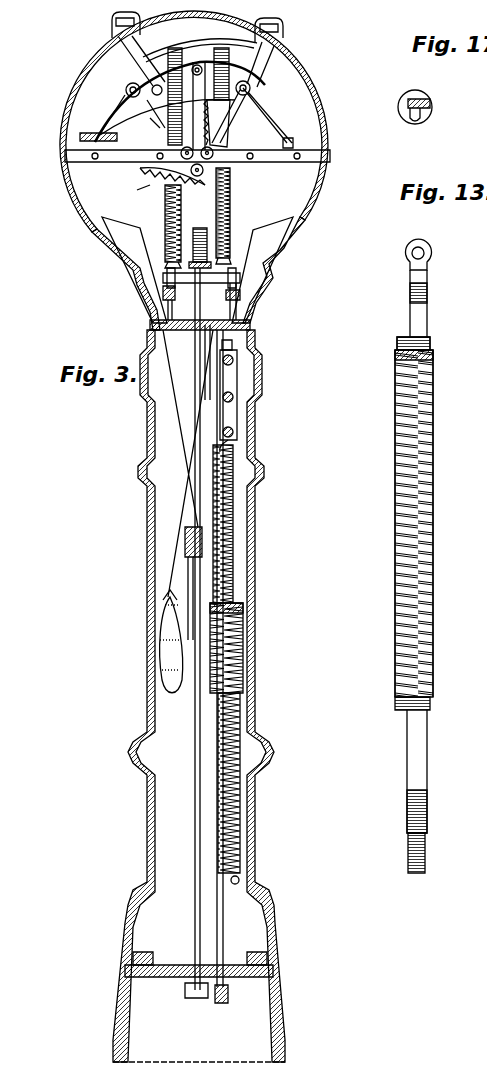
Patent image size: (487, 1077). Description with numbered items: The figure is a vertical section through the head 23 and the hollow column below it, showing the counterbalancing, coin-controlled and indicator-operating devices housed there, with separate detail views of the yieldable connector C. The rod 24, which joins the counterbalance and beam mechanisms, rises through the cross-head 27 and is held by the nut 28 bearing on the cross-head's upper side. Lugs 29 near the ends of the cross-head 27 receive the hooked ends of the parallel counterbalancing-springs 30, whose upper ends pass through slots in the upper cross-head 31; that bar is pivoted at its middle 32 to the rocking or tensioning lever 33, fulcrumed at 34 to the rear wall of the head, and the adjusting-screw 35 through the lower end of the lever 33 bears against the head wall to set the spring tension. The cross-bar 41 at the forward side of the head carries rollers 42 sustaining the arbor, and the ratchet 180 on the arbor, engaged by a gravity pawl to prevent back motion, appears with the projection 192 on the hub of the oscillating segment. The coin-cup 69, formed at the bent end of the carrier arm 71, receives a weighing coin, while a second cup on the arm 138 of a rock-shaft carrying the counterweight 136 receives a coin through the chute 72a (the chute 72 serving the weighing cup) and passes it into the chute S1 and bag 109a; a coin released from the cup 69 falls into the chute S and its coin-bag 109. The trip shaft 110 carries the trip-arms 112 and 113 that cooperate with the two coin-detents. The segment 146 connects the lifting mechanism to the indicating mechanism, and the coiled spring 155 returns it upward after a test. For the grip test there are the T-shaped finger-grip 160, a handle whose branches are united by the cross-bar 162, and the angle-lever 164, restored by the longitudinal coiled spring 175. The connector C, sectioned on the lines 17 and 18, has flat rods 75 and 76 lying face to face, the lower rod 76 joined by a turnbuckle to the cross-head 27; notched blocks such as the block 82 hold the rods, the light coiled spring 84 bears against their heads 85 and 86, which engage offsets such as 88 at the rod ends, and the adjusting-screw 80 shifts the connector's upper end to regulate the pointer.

In FIG. 3, the head 23 is at (322, 123).
In FIG. 3, the rod 24 is at (197, 730).
In FIG. 3, the cross-head 27 is at (240, 276).
In FIG. 3, the nut 28 is at (210, 255).
In FIG. 3, the lugs 29 is at (163, 275).
In FIG. 3, the counterbalancing-springs 30 is at (228, 180).
In FIG. 3, the upper cross-head 31 is at (210, 85).
In FIG. 3, the pivot 32 is at (197, 64).
In FIG. 3, the tensioning lever 33 is at (100, 113).
In FIG. 3, the fulcrum 34 is at (126, 88).
In FIG. 3, the adjusting-screw 35 is at (90, 140).
In FIG. 3, the cross-bar 41 is at (250, 167).
In FIG. 3, the rollers 42 is at (168, 195).
In FIG. 3, the weighing coin-cup 69 is at (132, 84).
In FIG. 3, the carrier arm 71 is at (270, 128).
In FIG. 3, the coin chute 72 is at (283, 36).
In FIG. 3, the coin chute 72a is at (136, 24).
In FIG. 13, the lower rod 76 is at (420, 775).
In FIG. 13, the adjusting-screw 80 is at (481, 730).
In FIG. 13, the block 82 is at (433, 358).
In FIG. 13, the coiled spring 84 is at (433, 572).
In FIG. 13, the head 85 is at (430, 344).
In FIG. 17, the head 85 is at (405, 112).
In FIG. 13, the head 86 is at (398, 708).
In FIG. 13, the offset 88 is at (397, 342).
In FIG. 17, the offset 88 is at (432, 115).
In FIG. 17, the rod 75 is at (422, 98).
In FIG. 3, the coin-bag 109 is at (160, 670).
In FIG. 3, the coin-bag 109a is at (243, 645).
In FIG. 3, the trip shaft 110 is at (250, 325).
In FIG. 3, the trip-arm 112 is at (240, 297).
In FIG. 3, the trip-arm 113 is at (165, 290).
In FIG. 3, the counterweight 136 is at (65, 160).
In FIG. 3, the coin-cup carrier 138 is at (160, 100).
In FIG. 3, the segment 146 is at (258, 112).
In FIG. 3, the coiled spring 155 is at (185, 530).
In FIG. 3, the finger-grip 160 is at (240, 390).
In FIG. 3, the cross-bar 162 is at (236, 360).
In FIG. 3, the angle-lever 164 is at (240, 420).
In FIG. 3, the coiled spring 175 is at (232, 560).
In FIG. 3, the ratchet 180 is at (137, 192).
In FIG. 3, the projection 192 is at (150, 170).
In FIG. 13, the section line 17 is at (486, 323).
In FIG. 13, the section line 18 is at (486, 368).
In FIG. 3, the chute S is at (96, 240).
In FIG. 3, the chute S1 is at (298, 240).
In FIG. 13, the yieldable connector C is at (448, 523).